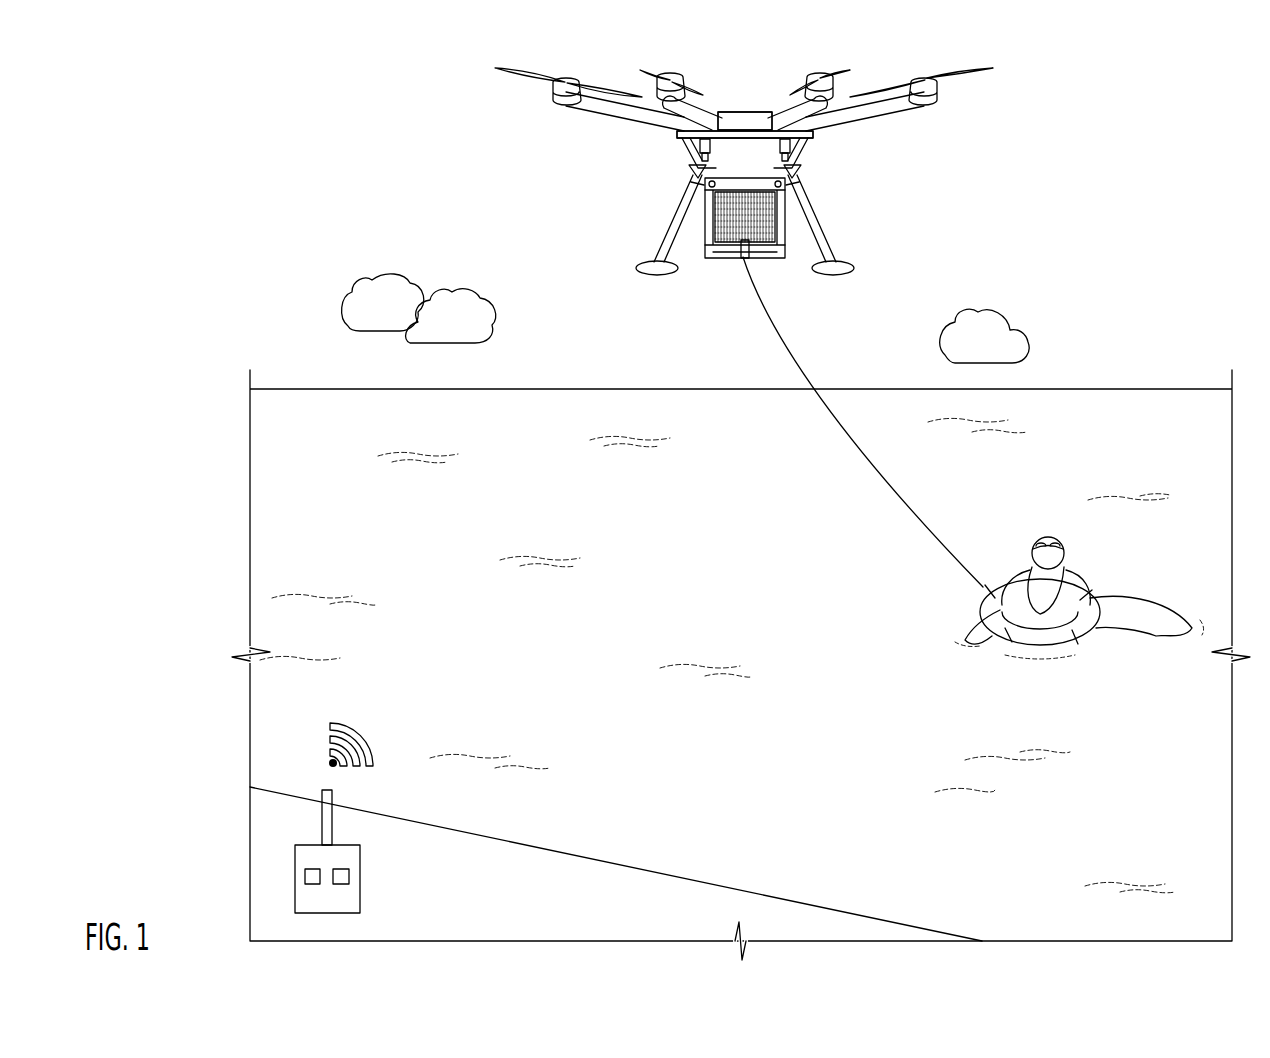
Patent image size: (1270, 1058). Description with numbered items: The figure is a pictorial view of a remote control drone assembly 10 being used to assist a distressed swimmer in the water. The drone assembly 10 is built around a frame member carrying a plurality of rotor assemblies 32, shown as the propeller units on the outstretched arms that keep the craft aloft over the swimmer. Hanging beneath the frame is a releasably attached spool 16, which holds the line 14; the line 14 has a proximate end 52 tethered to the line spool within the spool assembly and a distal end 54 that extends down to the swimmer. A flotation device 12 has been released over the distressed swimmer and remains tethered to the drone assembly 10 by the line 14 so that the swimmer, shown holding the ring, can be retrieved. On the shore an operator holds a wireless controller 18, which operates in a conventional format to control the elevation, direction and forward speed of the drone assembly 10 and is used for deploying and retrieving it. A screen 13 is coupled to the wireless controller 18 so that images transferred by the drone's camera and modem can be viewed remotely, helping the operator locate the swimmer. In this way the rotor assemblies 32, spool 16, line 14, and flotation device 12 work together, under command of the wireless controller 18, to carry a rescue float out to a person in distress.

The drone assembly 10 is at (779, 190).
The flotation device 12 is at (1050, 598).
The screen 13 is at (300, 876).
The line 14 is at (895, 490).
The spool 16 is at (784, 260).
The wireless controller 18 is at (360, 876).
The rotor assembly 32 is at (990, 67).
The proximate end 52 is at (768, 213).
The distal end 54 is at (982, 590).